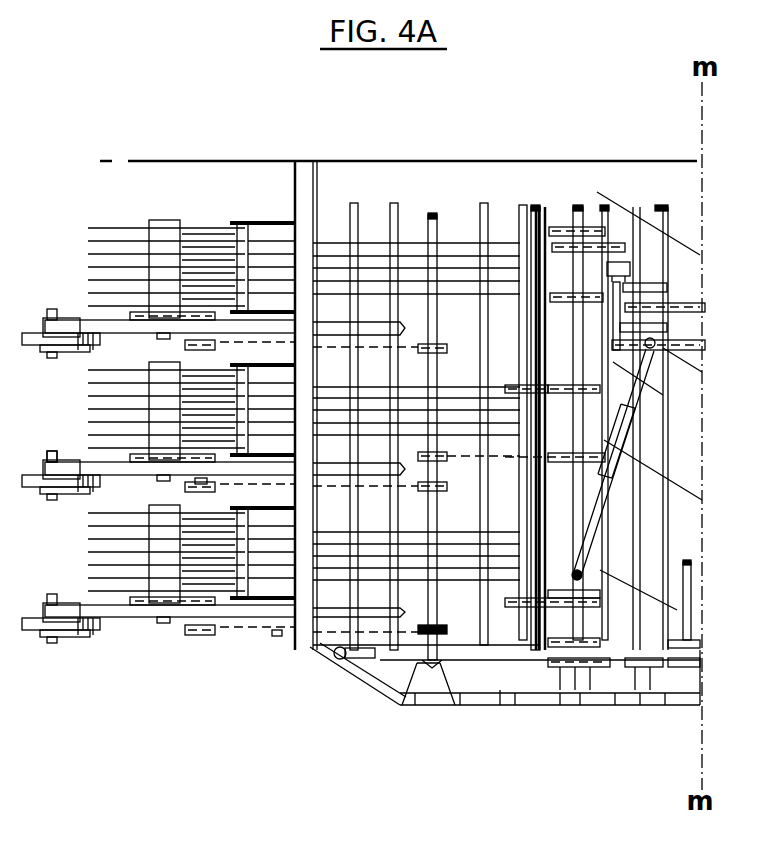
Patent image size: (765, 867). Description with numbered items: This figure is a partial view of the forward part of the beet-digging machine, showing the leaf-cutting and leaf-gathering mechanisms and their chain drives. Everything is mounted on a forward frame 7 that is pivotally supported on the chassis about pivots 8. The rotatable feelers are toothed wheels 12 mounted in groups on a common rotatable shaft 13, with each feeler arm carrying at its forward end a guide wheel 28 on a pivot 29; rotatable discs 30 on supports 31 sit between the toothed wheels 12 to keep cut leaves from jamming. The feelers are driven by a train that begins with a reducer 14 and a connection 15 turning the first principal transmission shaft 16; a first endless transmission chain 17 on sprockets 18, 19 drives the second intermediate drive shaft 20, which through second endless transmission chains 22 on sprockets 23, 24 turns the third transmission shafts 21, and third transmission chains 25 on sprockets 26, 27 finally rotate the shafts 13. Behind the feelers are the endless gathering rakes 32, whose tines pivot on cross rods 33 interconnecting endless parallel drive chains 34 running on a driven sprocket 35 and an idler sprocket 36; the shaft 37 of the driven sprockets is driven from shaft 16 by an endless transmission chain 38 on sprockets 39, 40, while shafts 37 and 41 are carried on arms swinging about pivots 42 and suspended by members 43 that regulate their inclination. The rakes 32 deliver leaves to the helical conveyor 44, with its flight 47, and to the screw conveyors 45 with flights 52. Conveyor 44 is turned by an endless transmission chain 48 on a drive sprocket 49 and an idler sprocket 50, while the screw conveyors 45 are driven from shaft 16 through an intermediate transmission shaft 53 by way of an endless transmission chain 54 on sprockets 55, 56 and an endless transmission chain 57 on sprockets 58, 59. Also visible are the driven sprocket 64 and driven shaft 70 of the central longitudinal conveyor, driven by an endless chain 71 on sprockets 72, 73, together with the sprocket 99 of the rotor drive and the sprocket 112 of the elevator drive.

The frame 7 is at (462, 700).
The pivots 8 is at (570, 715).
The toothed wheels 12 is at (95, 228).
The rotatable shaft 13 is at (165, 218).
The reducer 14 is at (690, 320).
The connection 15 is at (640, 400).
The first principal transmission shaft 16 is at (578, 225).
The first endless transmission chain 17 is at (494, 455).
The sprocket 18 is at (570, 465).
The sprocket 19 is at (446, 460).
The second intermediate drive shaft 20 is at (437, 226).
The third transmission shafts 21 is at (200, 484).
The second endless transmission chains 22 is at (245, 348).
The sprocket 23 is at (441, 346).
The sprocket 24 is at (198, 352).
The third transmission chains 25 is at (150, 607).
The sprocket 26 is at (215, 596).
The sprocket 27 is at (140, 607).
The guide wheel 28 is at (62, 335).
The pivot 29 is at (50, 452).
The rotatable discs 30 is at (202, 232).
The supports 31 is at (258, 222).
The endless gathering rakes 32 is at (370, 243).
The cross rods 33 is at (400, 215).
The endless parallel drive chains 34 is at (472, 690).
The driven sprocket 35 is at (492, 690).
The idler sprocket 36 is at (283, 632).
The shaft 37 is at (535, 205).
The endless transmission chain 38 is at (540, 578).
The sprocket 39 is at (600, 575).
The sprocket 40 is at (488, 700).
The shaft 41 is at (317, 182).
The pivots 42 is at (540, 695).
The members 43 is at (360, 665).
The helical conveyor 44 is at (600, 556).
The screw conveyors 45 is at (655, 523).
The helical flight 47 is at (598, 425).
The endless transmission chain 48 is at (575, 750).
The drive sprocket 49 is at (553, 700).
The idler sprocket 50 is at (610, 697).
The helical flight 52 is at (683, 232).
The intermediate transmission shaft 53 is at (691, 585).
The endless transmission chain 54 is at (615, 700).
The sprocket 55 is at (598, 605).
The sprocket 56 is at (695, 630).
The endless transmission chain 57 is at (660, 690).
The sprocket 58 is at (700, 648).
The sprocket 59 is at (596, 642).
The driven sprocket 64 is at (632, 268).
The driven shaft 70 is at (620, 228).
The endless chain 71 is at (558, 252).
The sprocket 72 is at (565, 225).
The sprocket 73 is at (635, 230).
The sprocket 99 is at (550, 225).
The sprocket 112 is at (560, 302).